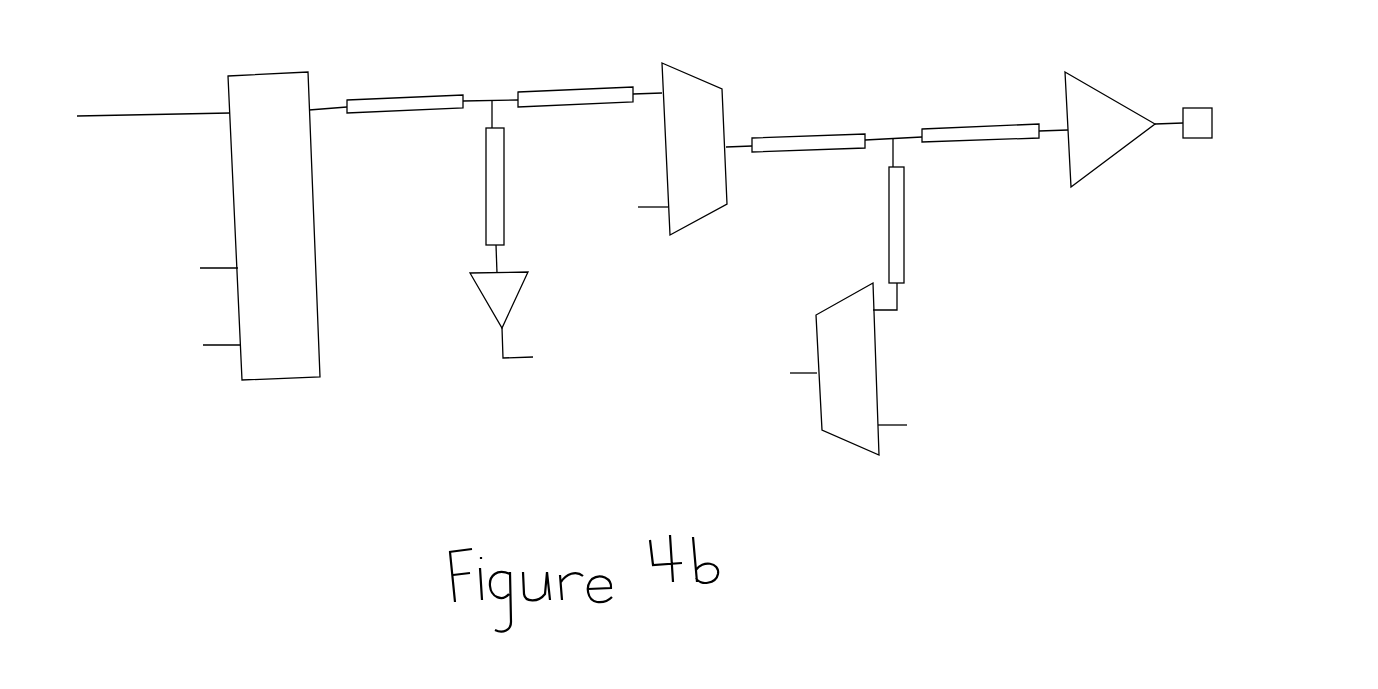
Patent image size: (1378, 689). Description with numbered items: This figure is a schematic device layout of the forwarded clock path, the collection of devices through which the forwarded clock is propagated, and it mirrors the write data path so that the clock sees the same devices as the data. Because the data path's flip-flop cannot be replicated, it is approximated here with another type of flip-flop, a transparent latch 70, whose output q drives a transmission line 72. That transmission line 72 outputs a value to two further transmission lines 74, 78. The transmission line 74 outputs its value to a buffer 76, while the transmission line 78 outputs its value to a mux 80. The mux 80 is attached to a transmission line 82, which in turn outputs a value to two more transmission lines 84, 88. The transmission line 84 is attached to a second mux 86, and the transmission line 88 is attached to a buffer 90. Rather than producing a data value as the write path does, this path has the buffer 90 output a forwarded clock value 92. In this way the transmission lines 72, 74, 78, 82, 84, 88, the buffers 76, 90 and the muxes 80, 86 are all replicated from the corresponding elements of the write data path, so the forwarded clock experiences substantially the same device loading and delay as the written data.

The transparent latch 70 is at (232, 247).
The transmission line 72 is at (405, 116).
The transmission line 74 is at (486, 181).
The buffer 76 is at (488, 298).
The transmission line 78 is at (605, 102).
The mux 80 is at (700, 218).
The transmission line 82 is at (832, 152).
The transmission line 84 is at (889, 217).
The mux 86 is at (875, 340).
The transmission line 88 is at (1012, 144).
The buffer 90 is at (1124, 140).
The forwarded clock value 92 is at (1196, 139).